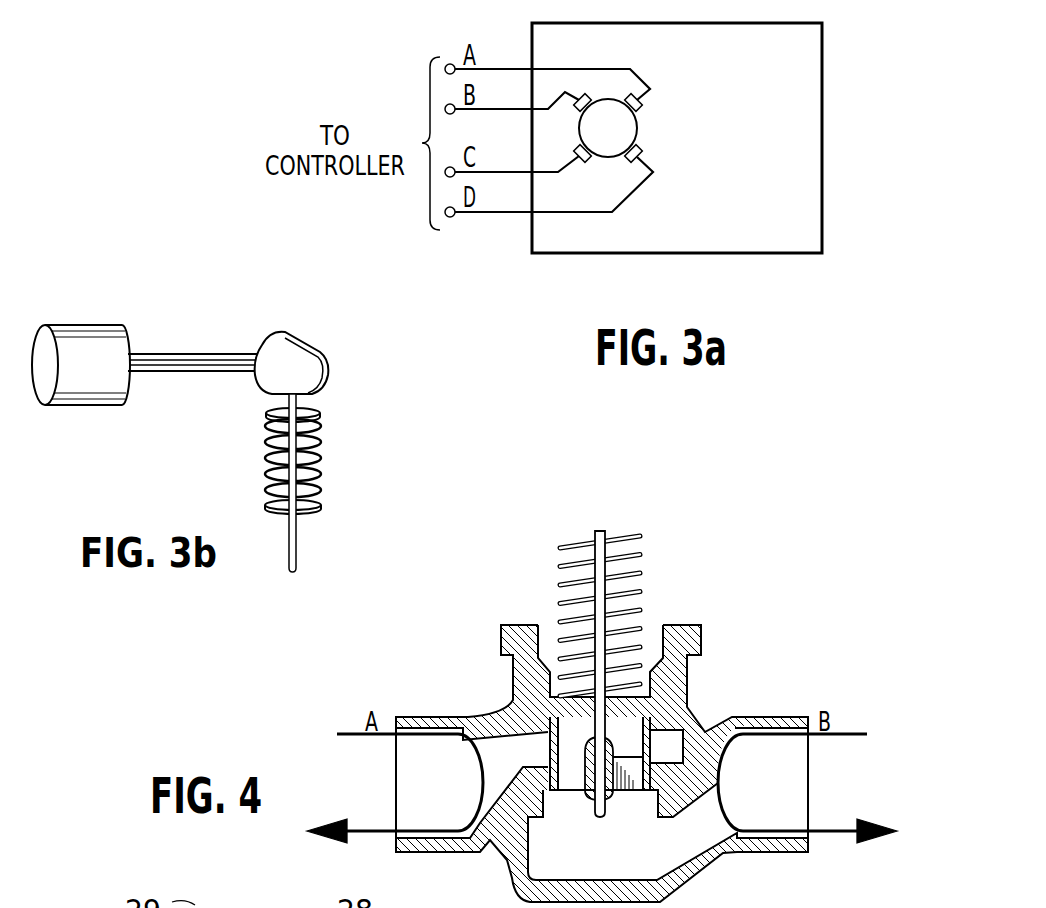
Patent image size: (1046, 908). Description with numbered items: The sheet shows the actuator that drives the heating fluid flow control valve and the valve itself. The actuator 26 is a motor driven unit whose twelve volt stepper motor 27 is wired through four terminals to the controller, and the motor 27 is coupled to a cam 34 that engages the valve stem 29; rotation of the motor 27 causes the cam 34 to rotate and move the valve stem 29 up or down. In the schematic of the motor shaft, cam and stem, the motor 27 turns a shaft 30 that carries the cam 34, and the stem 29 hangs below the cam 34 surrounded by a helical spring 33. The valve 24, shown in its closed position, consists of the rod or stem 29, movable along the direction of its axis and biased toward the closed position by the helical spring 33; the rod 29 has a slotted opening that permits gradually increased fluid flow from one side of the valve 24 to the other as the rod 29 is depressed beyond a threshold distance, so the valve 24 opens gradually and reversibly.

In FIG. 4, the valve 24 is at (703, 705).
In FIG. 3A, the actuator 26 is at (822, 130).
In FIG. 3A, the stepper motor 27 is at (612, 145).
In FIG. 3B, the stepper motor 27 is at (72, 345).
In FIG. 3B, the valve stem 29 is at (295, 548).
In FIG. 4, the valve stem 29 is at (607, 530).
In FIG. 3B, the motor shaft 30 is at (180, 354).
In FIG. 3B, the helical spring 33 is at (323, 457).
In FIG. 4, the helical spring 33 is at (639, 590).
In FIG. 3B, the cam 34 is at (317, 350).